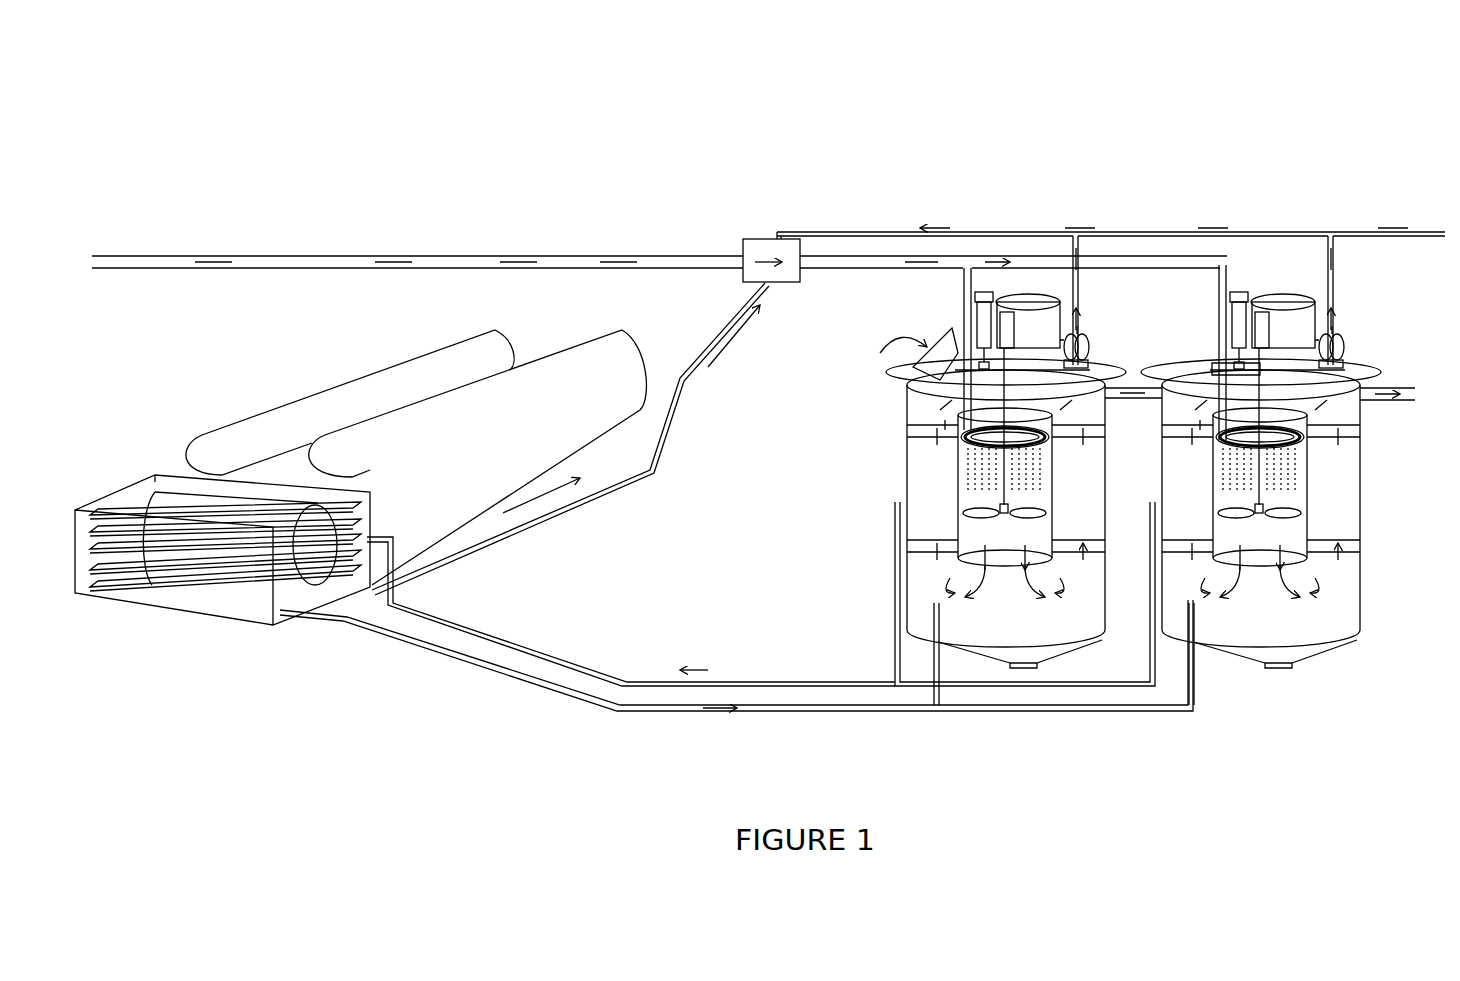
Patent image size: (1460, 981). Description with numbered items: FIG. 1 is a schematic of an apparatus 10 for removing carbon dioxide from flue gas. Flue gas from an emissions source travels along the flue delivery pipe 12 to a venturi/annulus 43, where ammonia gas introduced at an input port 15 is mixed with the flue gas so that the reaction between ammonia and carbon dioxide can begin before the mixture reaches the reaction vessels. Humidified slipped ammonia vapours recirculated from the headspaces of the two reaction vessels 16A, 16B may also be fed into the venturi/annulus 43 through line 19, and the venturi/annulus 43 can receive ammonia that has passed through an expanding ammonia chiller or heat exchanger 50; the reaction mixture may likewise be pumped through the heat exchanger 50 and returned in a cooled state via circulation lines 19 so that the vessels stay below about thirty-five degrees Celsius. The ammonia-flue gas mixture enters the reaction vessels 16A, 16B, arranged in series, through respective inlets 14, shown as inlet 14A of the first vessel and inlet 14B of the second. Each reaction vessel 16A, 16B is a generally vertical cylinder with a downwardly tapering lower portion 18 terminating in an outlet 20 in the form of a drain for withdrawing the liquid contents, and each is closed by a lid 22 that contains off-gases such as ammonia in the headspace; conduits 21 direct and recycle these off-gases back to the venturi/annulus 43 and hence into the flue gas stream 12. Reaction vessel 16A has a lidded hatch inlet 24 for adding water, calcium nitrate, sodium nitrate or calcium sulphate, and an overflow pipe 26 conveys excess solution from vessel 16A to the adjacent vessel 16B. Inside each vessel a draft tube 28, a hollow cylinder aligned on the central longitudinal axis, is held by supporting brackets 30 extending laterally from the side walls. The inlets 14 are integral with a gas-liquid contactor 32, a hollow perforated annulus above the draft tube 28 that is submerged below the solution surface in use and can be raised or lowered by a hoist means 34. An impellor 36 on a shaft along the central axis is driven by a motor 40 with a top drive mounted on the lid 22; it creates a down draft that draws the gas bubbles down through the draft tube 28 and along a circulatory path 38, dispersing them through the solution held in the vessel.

The apparatus 10 is at (1092, 198).
The flue delivery pipe 12 is at (250, 251).
The inlet 14 is at (975, 300).
The lid of first tank 14A is at (943, 368).
The lid of second tank 14B is at (1213, 367).
The input port 15 is at (778, 239).
The reaction vessel 16A is at (1105, 494).
The reaction vessel 16B is at (1358, 496).
The downwardly tapering lower portion 18 is at (1010, 648).
The line 19 is at (678, 395).
The outlet 20 is at (1042, 668).
The conduit 21 is at (1082, 315).
The lid 22 is at (1108, 366).
The lidded hatch inlet 24 is at (927, 354).
The overflow pipe 26 is at (1125, 396).
The draft tube 28 is at (1052, 484).
The supporting bracket 30 is at (1082, 437).
The gas-liquid contactor 32 is at (1050, 438).
The hoist means 34 is at (1238, 315).
The impellor 36 is at (1042, 513).
The circulatory path 38 is at (1040, 585).
The motor 40 is at (1047, 328).
The venturi/annulus 43 is at (741, 282).
The heat exchanger 50 is at (188, 585).